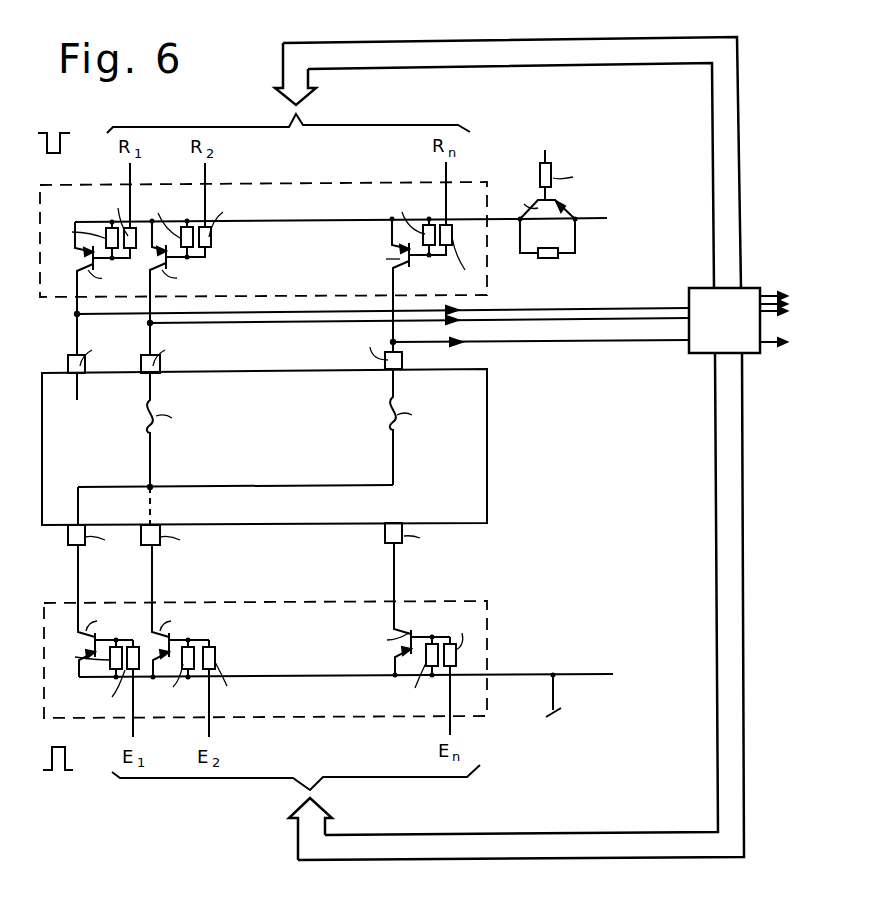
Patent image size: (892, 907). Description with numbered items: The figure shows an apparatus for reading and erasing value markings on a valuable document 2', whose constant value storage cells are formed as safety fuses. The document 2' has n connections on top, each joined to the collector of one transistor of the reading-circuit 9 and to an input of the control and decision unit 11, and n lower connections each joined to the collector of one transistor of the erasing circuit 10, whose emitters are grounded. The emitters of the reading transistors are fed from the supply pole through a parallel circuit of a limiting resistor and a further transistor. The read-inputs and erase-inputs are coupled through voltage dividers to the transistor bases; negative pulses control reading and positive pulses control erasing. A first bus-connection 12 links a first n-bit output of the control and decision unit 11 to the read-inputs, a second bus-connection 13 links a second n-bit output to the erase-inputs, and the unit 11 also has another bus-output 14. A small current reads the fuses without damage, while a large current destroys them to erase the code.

The valuable document 2' is at (284, 441).
The reading-circuit 9 is at (47, 293).
The erasing circuit 10 is at (58, 618).
The control and decision unit 11 is at (705, 346).
The first bus-connection 12 is at (645, 57).
The second bus-connection 13 is at (635, 840).
The bus-output 14 is at (771, 345).